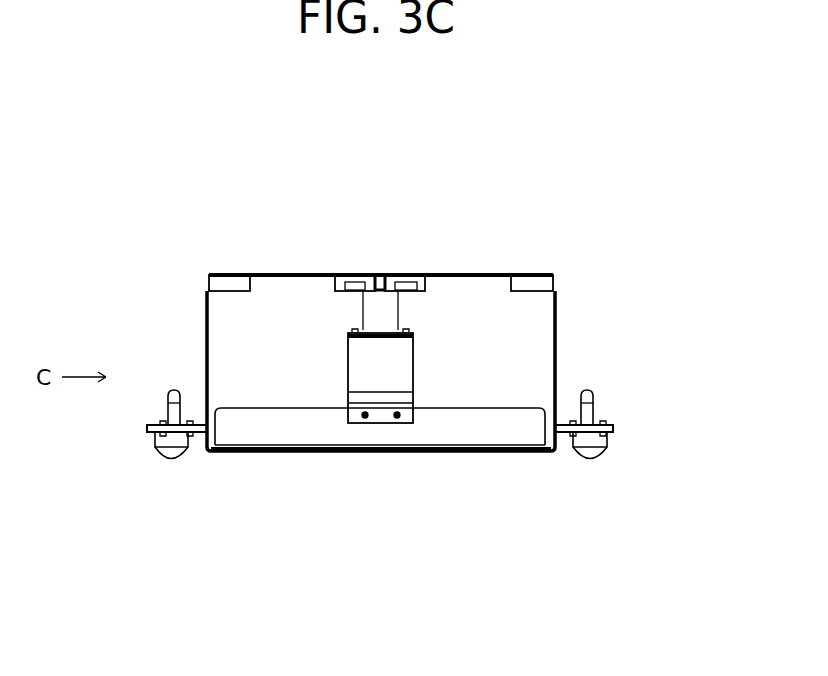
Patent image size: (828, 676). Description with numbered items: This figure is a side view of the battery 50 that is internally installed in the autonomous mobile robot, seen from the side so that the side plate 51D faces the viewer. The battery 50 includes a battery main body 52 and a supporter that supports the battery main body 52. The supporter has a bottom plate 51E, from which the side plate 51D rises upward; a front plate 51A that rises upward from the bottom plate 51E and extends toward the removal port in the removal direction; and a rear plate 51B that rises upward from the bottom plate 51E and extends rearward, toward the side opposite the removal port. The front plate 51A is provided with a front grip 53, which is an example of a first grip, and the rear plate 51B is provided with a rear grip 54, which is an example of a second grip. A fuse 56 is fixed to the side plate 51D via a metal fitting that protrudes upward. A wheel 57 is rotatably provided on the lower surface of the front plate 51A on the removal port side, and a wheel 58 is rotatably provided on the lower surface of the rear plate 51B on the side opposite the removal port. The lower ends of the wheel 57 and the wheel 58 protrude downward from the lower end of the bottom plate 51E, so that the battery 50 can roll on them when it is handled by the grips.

The battery 50 is at (443, 233).
The battery main body 52 is at (290, 273).
The fuse 56 is at (371, 297).
The rear grip 54 is at (173, 389).
The front grip 53 is at (585, 389).
The front plate 51A is at (612, 426).
The rear plate 51B is at (148, 427).
The side plate 51D is at (361, 441).
The bottom plate 51E is at (283, 453).
The wheel 57 is at (590, 464).
The wheel 58 is at (172, 464).